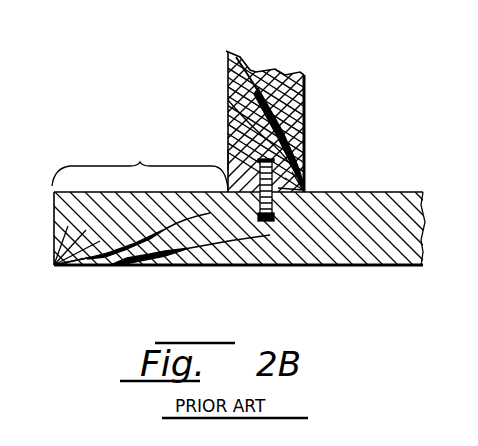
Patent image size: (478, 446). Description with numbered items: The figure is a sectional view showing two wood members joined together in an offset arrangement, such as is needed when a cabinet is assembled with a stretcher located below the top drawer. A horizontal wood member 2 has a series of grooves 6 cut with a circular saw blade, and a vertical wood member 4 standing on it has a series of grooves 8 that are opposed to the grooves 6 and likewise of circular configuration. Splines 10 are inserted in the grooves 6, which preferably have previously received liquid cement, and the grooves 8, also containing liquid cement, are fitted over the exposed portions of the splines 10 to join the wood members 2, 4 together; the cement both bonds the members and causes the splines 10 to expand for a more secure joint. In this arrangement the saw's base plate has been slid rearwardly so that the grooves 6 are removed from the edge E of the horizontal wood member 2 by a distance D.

The horizontal wood member 2 is at (385, 191).
The vertical wood member 4 is at (305, 108).
The grooves 6 is at (267, 221).
The grooves 8 is at (304, 140).
The splines 10 is at (229, 159).
The distance D is at (140, 166).
The edge E is at (54, 230).